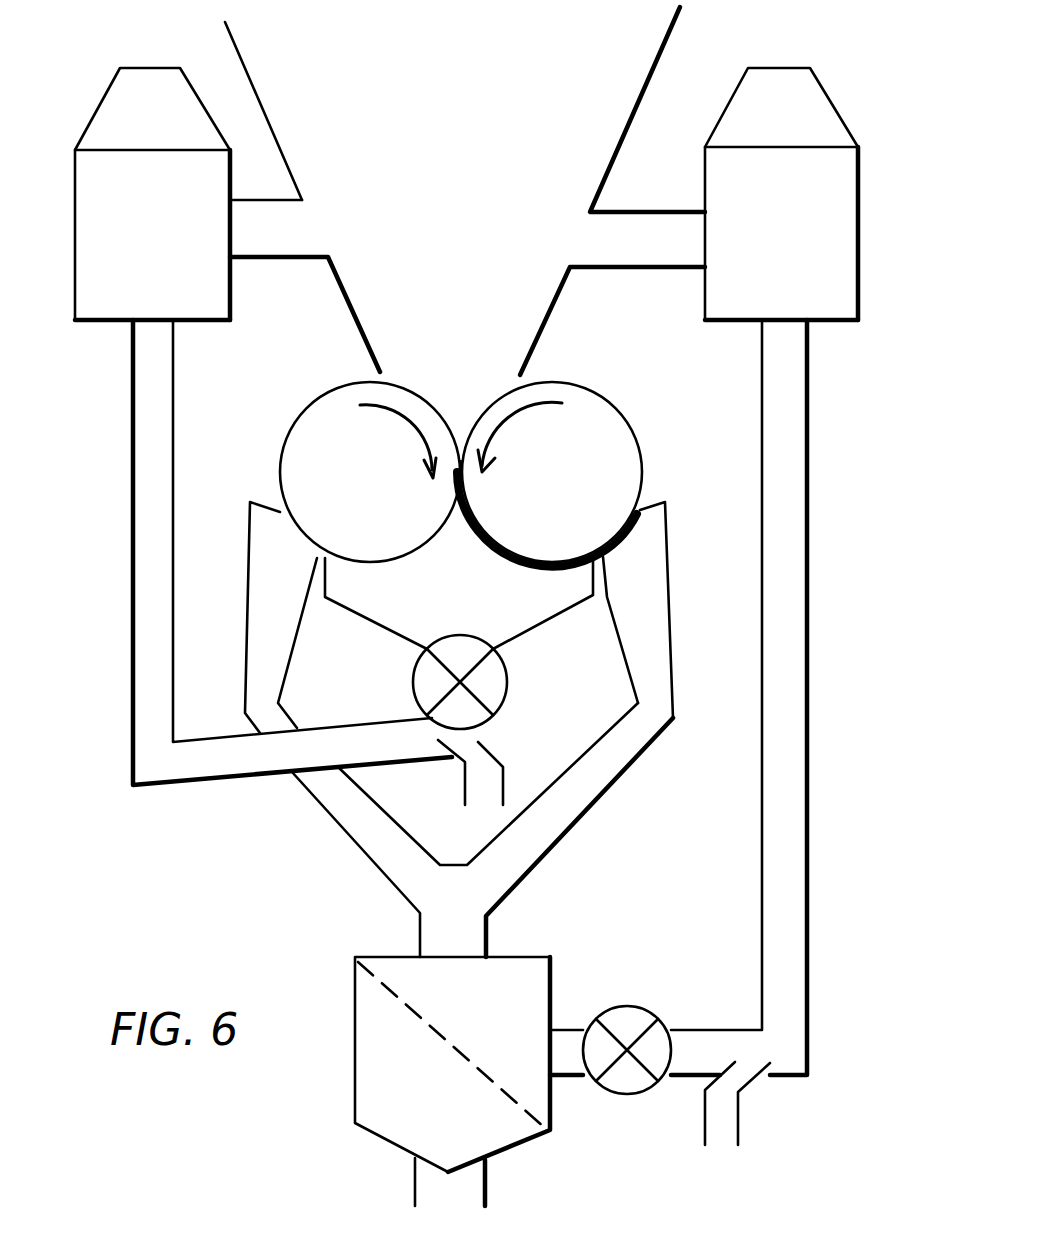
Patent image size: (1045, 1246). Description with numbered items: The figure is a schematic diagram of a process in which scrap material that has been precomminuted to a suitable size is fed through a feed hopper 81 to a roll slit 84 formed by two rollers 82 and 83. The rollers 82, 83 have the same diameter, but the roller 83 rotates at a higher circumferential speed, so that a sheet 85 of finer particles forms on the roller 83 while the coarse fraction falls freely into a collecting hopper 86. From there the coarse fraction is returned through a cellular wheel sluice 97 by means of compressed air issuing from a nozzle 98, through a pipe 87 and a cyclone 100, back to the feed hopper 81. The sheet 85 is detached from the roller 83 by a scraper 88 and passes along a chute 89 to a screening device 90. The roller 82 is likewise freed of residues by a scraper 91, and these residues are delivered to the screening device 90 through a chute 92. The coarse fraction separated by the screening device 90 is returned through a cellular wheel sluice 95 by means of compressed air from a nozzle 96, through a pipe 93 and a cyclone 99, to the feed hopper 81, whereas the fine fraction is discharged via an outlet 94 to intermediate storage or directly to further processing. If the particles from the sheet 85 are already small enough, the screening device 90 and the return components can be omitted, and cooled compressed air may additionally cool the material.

The feed hopper 81 is at (625, 95).
The roller 82 is at (335, 400).
The roller 83 is at (595, 412).
The roll slit 84 is at (460, 476).
The sheet 85 is at (545, 560).
The collecting hopper 86 is at (410, 632).
The pipe 87 is at (145, 513).
The scraper 88 is at (655, 500).
The chute 89 is at (570, 815).
The screening device 90 is at (533, 990).
The scraper 91 is at (265, 502).
The chute 92 is at (350, 820).
The pipe 93 is at (795, 660).
The outlet 94 is at (475, 1180).
The cellular wheel sluice 95 is at (640, 1015).
The nozzle 96 is at (728, 1118).
The cellular wheel sluice 97 is at (505, 668).
The nozzle 98 is at (500, 778).
The cyclone 99 is at (840, 247).
The cyclone 100 is at (110, 300).